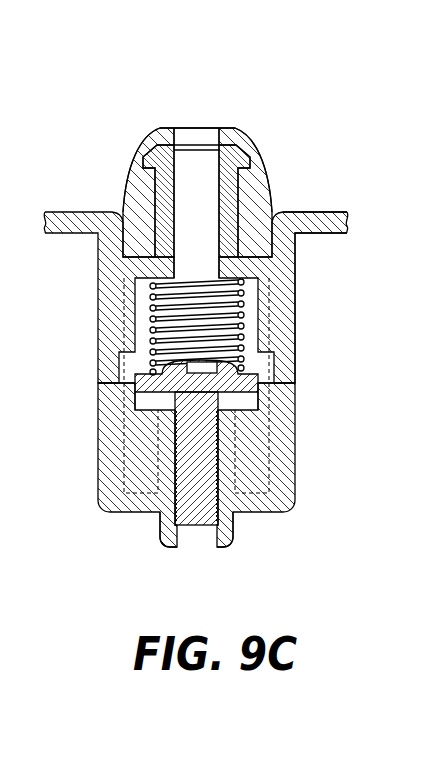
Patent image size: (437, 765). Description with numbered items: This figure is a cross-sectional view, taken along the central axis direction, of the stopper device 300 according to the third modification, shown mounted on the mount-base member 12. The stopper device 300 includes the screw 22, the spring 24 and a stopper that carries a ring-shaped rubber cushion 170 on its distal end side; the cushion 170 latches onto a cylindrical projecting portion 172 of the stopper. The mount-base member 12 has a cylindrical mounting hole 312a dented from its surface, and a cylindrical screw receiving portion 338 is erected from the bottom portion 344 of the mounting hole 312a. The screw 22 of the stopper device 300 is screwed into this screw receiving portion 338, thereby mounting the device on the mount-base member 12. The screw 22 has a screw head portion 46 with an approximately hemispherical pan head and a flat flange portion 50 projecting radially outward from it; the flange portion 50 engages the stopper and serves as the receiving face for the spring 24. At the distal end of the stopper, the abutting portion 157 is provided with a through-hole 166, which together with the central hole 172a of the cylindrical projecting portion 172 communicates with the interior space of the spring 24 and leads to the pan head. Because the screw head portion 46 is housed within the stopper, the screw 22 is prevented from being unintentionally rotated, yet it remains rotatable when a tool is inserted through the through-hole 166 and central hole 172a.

The stopper device 300 is at (137, 147).
The abutting portion 157 is at (158, 128).
The through-hole 166 is at (198, 130).
The cushion 170 is at (238, 138).
The cylindrical projecting portion 172 is at (163, 197).
The central hole 172a is at (180, 226).
The mounting hole 312a is at (276, 230).
The mount-base member 12 is at (320, 223).
The spring 24 is at (240, 312).
The flange portion 50 is at (100, 383).
The screw head portion 46 is at (262, 384).
The screw receiving portion 338 is at (227, 453).
The bottom portion 344 is at (135, 505).
The screw 22 is at (203, 497).